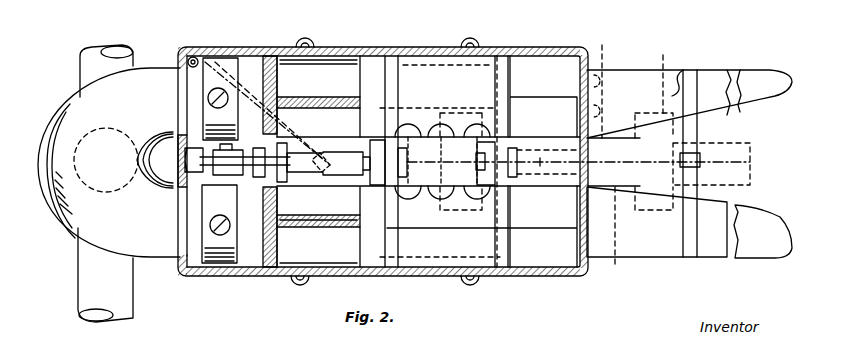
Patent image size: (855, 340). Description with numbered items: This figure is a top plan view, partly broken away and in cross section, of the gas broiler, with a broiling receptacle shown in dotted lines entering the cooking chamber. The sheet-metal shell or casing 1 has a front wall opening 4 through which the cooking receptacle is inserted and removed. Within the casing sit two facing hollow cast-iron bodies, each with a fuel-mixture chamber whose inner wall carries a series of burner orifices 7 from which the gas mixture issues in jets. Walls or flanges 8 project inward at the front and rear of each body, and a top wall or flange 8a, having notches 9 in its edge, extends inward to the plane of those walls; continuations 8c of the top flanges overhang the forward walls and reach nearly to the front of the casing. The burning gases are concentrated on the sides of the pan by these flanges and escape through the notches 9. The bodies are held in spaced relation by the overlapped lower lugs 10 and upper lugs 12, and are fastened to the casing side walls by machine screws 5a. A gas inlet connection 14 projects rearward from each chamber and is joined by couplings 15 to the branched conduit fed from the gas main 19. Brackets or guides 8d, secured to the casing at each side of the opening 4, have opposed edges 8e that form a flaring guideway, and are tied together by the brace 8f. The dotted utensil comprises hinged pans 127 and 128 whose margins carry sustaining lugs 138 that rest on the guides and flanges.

The shell or casing 1 is at (345, 47).
The front wall opening 4 is at (595, 148).
The machine screws 5a is at (484, 40).
The burner orifices 7 is at (312, 220).
The walls or flanges 8 is at (288, 134).
The top wall or flange 8a is at (440, 161).
The flange continuations 8c is at (570, 182).
The brackets or guides 8d is at (650, 155).
The opposed edges 8e is at (712, 178).
The brace 8f is at (676, 70).
The notches 9 is at (436, 180).
The lower arms or lugs 10 is at (112, 162).
The upper arms or lugs 12 is at (399, 88).
The gas inlet connection 14 is at (230, 166).
The couplings 15 is at (230, 60).
The gas main 19 is at (194, 55).
The pan 127 is at (609, 78).
The pan 128 is at (617, 237).
The sustaining lugs 138 is at (662, 57).